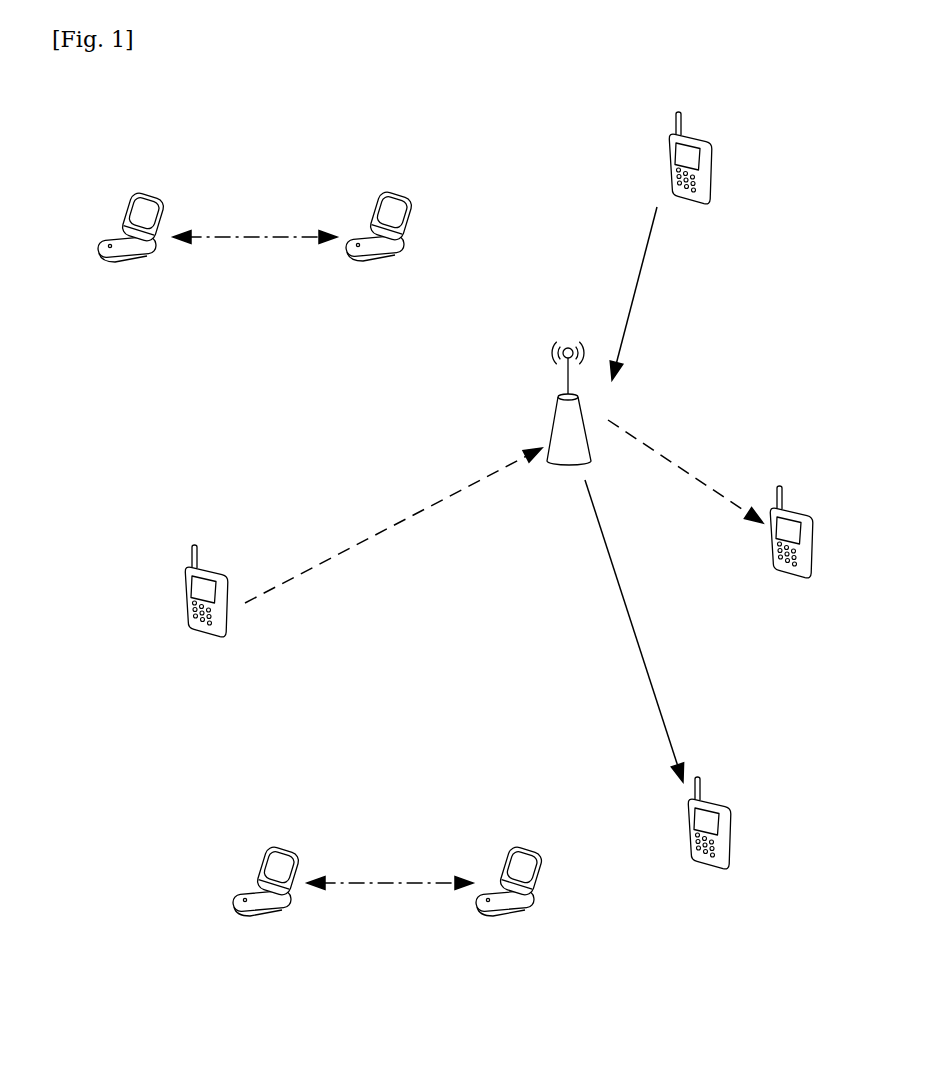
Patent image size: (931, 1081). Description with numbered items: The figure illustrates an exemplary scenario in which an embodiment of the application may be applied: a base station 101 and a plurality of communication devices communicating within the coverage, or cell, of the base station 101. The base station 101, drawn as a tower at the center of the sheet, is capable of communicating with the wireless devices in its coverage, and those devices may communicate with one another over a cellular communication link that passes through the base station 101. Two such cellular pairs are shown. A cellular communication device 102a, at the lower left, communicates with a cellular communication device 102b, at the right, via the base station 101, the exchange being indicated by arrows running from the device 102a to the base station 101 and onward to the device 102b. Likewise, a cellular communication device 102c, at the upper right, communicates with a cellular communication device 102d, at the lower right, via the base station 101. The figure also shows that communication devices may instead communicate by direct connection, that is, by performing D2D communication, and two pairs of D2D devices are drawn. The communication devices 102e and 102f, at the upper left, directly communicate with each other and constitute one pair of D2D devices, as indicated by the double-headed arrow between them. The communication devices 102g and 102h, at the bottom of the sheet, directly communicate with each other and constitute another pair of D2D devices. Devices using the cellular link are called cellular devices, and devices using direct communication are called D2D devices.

The base station 101 is at (553, 427).
The cellular communication device 102a is at (208, 612).
The cellular communication device 102b is at (790, 550).
The cellular communication device 102c is at (692, 175).
The cellular communication device 102d is at (712, 842).
The communication device 102e is at (131, 246).
The communication device 102f is at (379, 245).
The communication device 102g is at (266, 901).
The communication device 102h is at (509, 901).